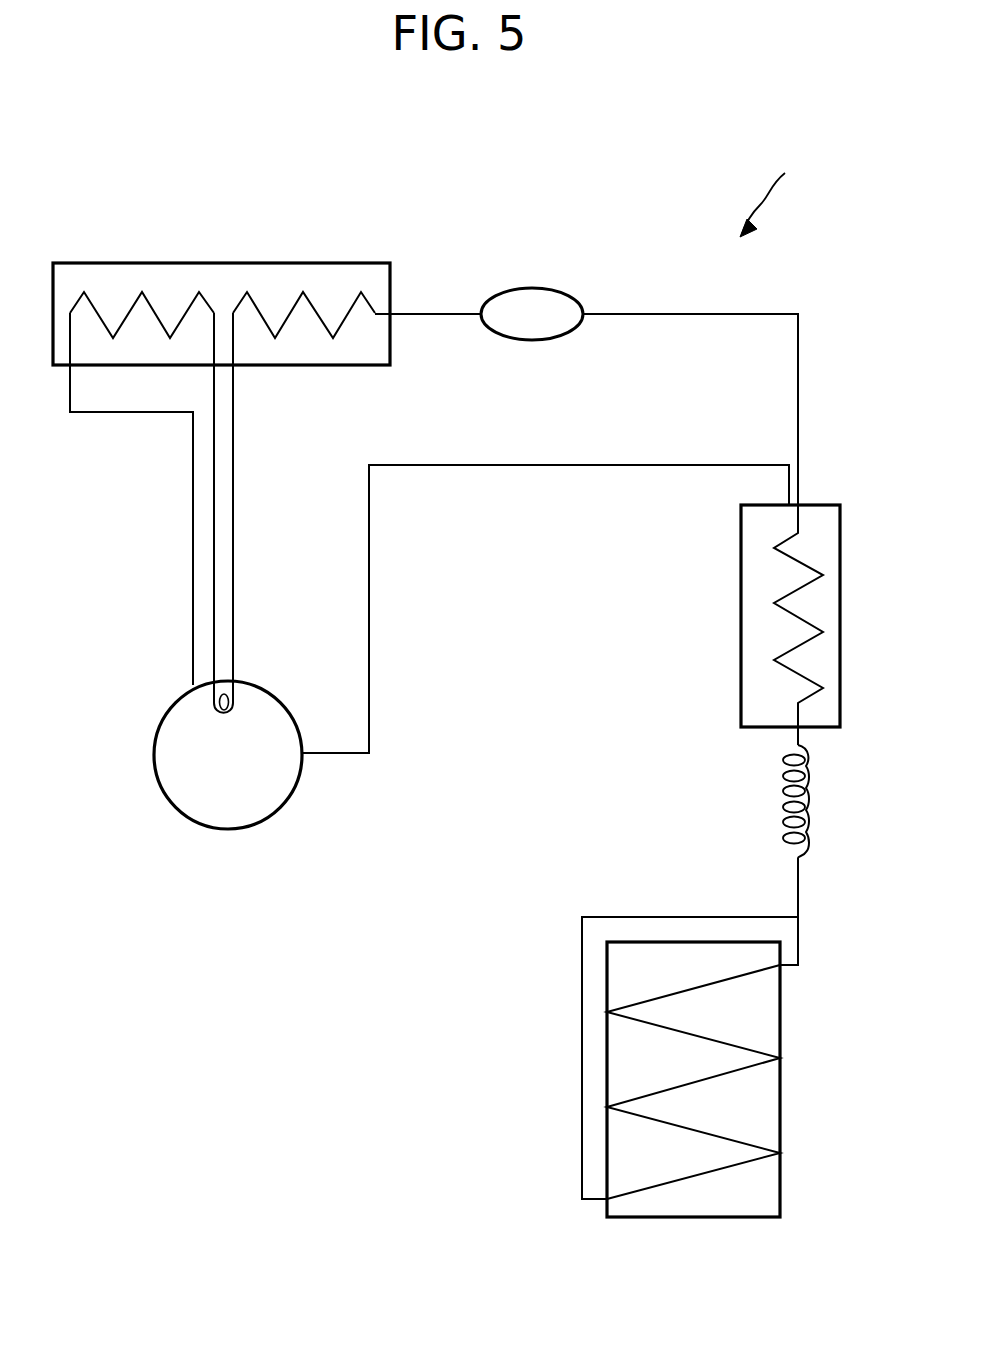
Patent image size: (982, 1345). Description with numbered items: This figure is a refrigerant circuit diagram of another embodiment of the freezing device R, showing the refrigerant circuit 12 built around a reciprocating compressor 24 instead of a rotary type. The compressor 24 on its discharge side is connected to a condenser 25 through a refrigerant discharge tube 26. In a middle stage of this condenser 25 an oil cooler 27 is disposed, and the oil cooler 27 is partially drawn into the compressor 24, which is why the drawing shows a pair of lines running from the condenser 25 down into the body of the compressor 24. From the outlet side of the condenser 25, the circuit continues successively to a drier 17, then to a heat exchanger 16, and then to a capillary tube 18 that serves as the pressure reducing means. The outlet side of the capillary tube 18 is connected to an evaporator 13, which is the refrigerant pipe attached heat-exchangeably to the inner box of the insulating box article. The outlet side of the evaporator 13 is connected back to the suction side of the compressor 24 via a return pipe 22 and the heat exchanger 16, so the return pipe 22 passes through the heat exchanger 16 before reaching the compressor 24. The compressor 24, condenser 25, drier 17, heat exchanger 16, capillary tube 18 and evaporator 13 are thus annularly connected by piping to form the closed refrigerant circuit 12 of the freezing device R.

The refrigerant circuit 12 is at (479, 494).
The evaporator 13 is at (607, 1086).
The heat exchanger 16 is at (750, 593).
The drier 17 is at (532, 288).
The capillary tube 18 is at (785, 790).
The return pipe 22 is at (582, 975).
The reciprocating compressor 24 is at (234, 812).
The condenser 25 is at (245, 263).
The refrigerant discharge tube 26 is at (193, 547).
The oil cooler 27 is at (234, 700).
The freezing device R is at (774, 192).